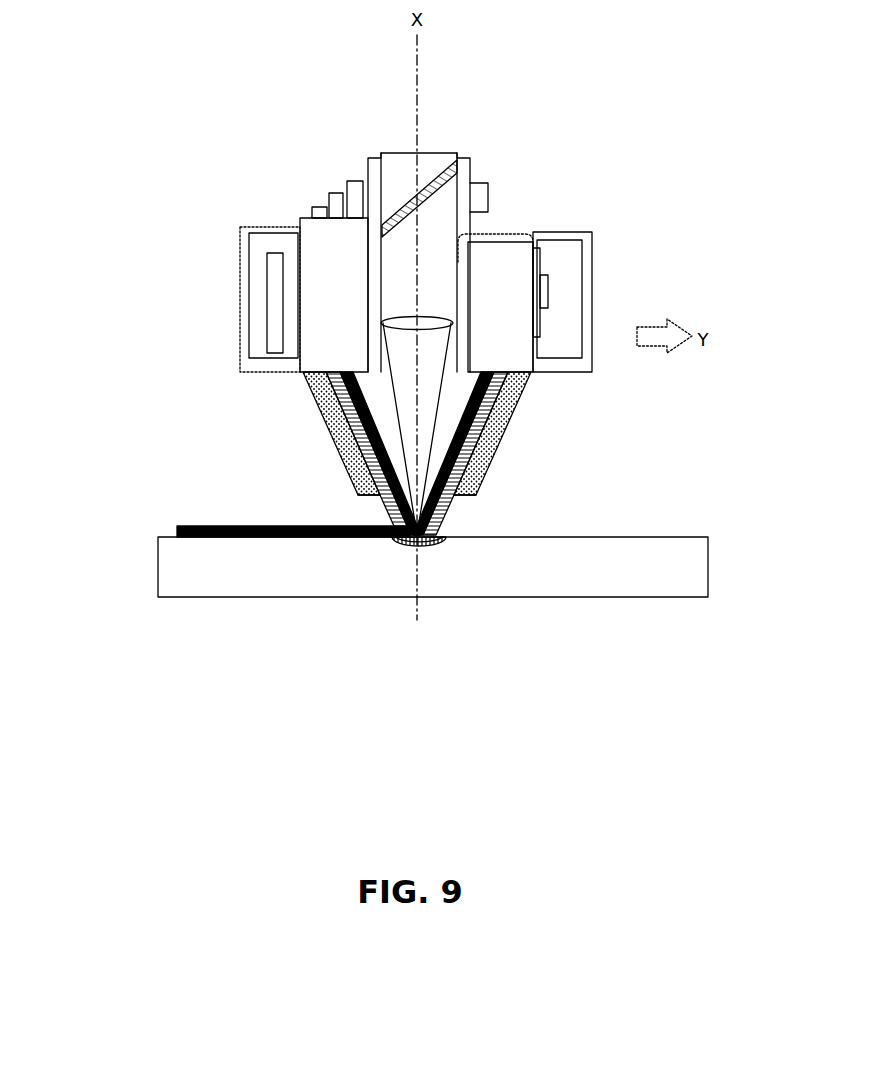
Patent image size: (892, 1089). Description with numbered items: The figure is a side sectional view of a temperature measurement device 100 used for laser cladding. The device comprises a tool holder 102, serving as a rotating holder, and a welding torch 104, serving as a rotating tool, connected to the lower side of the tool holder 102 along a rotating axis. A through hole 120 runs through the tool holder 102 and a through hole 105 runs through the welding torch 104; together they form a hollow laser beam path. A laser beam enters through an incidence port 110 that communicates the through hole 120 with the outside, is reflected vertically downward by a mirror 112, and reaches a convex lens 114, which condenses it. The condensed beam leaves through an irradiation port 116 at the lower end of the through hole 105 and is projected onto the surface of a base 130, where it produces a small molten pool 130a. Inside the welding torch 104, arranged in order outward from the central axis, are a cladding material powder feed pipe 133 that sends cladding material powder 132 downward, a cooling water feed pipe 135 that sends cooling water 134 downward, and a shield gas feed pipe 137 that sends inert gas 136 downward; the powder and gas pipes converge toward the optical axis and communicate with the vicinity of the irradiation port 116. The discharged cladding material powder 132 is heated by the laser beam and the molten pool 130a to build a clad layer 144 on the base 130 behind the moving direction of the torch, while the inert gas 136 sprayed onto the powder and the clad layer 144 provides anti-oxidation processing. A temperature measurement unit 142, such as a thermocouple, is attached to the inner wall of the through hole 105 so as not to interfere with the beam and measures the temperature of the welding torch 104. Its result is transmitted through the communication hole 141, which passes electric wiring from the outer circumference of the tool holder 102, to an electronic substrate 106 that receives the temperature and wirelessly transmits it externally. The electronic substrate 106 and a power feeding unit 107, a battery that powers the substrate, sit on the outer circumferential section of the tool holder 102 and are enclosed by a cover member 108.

The temperature measurement device 100 is at (614, 124).
The tool holder 102 is at (538, 233).
The welding torch 104 is at (431, 453).
The through hole 105 is at (382, 537).
The electronic substrate 106 is at (548, 290).
The power feeding unit 107 is at (275, 278).
The cover member 108 is at (592, 270).
The incidence port 110 is at (489, 193).
The mirror 112 is at (473, 158).
The convex lens 114 is at (432, 318).
The irradiation port 116 is at (440, 525).
The through hole 120 is at (400, 158).
The base 130 is at (618, 548).
The molten pool 130a is at (430, 546).
The cladding material powder 132 is at (353, 455).
The cladding material powder feed pipe 133 is at (356, 182).
The cooling water 134 is at (318, 412).
The cooling water feed pipe 135 is at (336, 194).
The inert gas 136 is at (364, 480).
The shield gas feed pipe 137 is at (320, 208).
The communication hole 141 is at (503, 233).
The temperature measurement unit 142 is at (425, 532).
The clad layer 144 is at (190, 527).